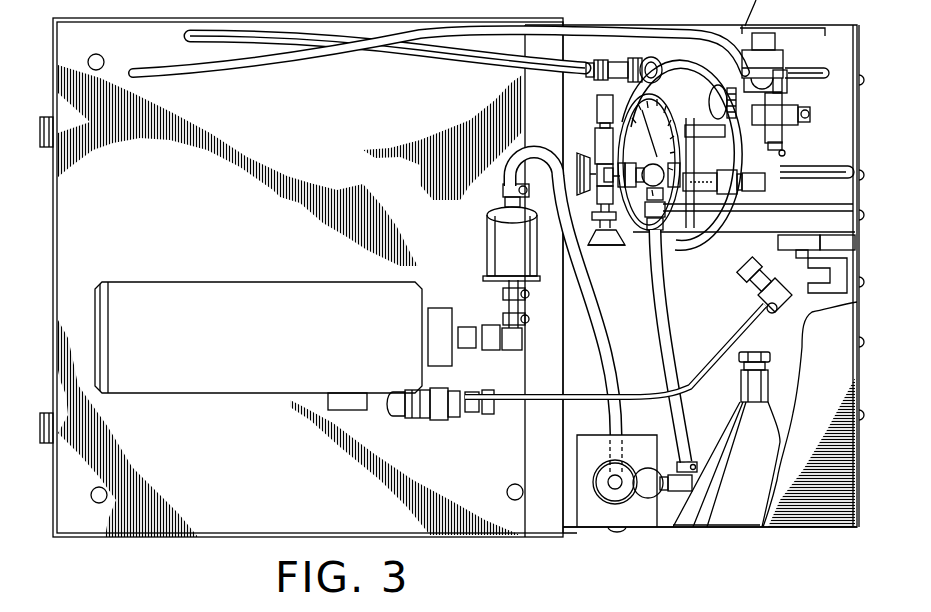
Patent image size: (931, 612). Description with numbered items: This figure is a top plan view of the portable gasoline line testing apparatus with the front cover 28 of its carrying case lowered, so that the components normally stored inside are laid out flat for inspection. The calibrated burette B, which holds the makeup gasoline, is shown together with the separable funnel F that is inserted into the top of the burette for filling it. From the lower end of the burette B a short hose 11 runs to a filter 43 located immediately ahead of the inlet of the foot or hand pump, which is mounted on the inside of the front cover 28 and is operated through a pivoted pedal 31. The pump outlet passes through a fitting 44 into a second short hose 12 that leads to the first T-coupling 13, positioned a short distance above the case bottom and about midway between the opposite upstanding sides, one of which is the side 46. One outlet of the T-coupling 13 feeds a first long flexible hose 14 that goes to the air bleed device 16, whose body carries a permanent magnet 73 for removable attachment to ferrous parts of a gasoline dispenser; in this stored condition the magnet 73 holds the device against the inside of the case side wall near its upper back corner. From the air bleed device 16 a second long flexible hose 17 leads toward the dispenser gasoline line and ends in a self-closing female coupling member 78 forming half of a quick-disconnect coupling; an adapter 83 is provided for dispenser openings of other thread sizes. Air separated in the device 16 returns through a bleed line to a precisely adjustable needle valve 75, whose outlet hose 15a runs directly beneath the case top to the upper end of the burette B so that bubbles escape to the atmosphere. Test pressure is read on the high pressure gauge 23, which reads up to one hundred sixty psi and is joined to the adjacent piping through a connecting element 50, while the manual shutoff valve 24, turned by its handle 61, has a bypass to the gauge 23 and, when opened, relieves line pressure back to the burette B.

The front cover 28 is at (270, 210).
The pedal 31 is at (272, 343).
The filter 43 is at (487, 222).
The fitting 44 is at (432, 416).
The short hose 11 is at (600, 326).
The short hose 12 is at (628, 393).
The hose 15a is at (676, 299).
The second long flexible hose 17 is at (490, 62).
The self-closing female coupling member 78 is at (600, 80).
The manual shutoff valve 24 is at (597, 148).
The handle 61 is at (608, 248).
The needle valve 75 is at (665, 168).
The high pressure gauge 23 is at (714, 166).
The fitting 50 is at (745, 176).
The permanent magnet 73 is at (772, 68).
The first long flexible hose 14 is at (796, 69).
The air bleed device 16 is at (790, 84).
The first T-coupling 13 is at (778, 242).
The adapter 83 is at (768, 372).
The funnel F is at (724, 456).
The burette B is at (598, 472).
The upstanding side 46 is at (663, 529).